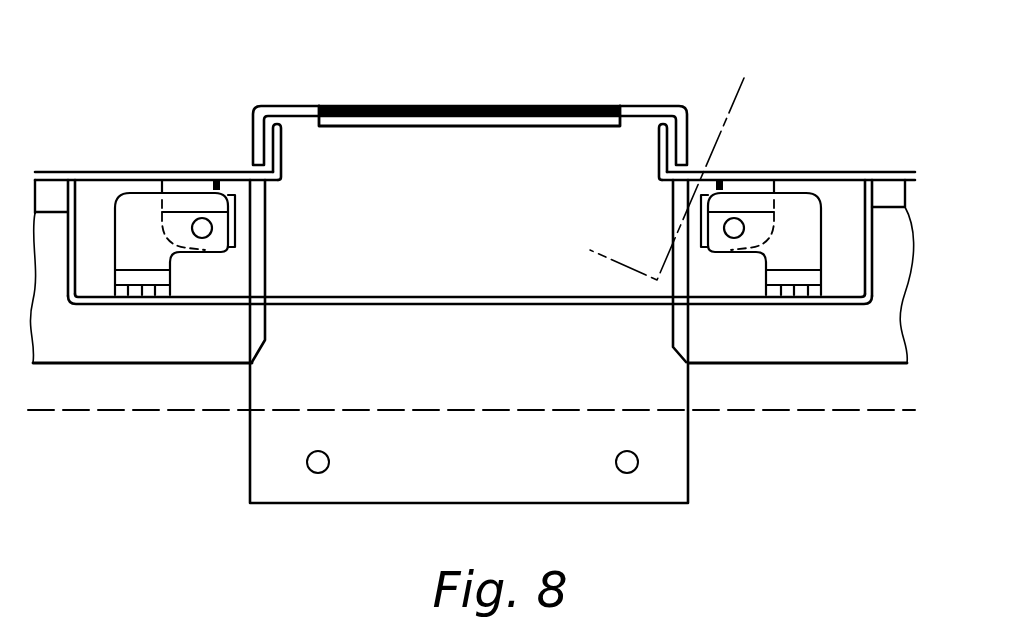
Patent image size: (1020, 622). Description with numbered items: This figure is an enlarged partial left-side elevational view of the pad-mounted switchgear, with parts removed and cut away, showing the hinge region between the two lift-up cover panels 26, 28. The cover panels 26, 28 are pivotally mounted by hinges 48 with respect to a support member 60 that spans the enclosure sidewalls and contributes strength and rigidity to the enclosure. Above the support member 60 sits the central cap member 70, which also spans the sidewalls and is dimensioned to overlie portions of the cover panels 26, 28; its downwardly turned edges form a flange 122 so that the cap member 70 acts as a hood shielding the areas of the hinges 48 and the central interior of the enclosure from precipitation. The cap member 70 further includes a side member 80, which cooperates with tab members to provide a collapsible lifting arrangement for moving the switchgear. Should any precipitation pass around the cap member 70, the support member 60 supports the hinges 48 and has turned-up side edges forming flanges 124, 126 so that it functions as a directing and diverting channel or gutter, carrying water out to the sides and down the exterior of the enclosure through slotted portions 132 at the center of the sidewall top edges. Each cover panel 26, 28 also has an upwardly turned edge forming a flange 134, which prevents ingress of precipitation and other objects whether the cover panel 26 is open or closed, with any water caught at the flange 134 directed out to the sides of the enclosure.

The lift-up cover panel 26 is at (733, 105).
The lift-up cover panel 28 is at (85, 165).
The hinge 48 is at (746, 275).
The support member 60 is at (343, 292).
The central cap member 70 is at (486, 100).
The side member 80 is at (250, 447).
The flange 122 is at (690, 128).
The flange 124 is at (78, 200).
The flange 126 is at (249, 142).
The slotted portion 132 is at (68, 282).
The flange 134 is at (658, 142).